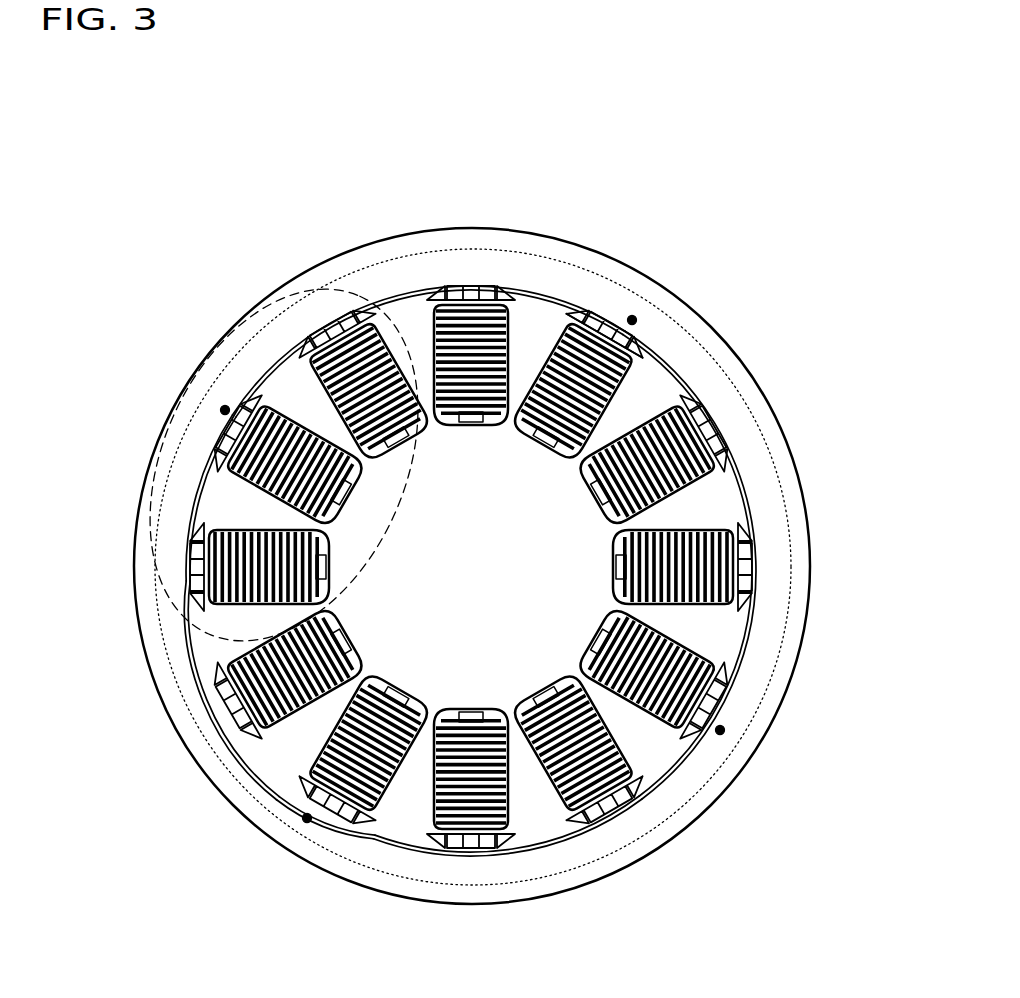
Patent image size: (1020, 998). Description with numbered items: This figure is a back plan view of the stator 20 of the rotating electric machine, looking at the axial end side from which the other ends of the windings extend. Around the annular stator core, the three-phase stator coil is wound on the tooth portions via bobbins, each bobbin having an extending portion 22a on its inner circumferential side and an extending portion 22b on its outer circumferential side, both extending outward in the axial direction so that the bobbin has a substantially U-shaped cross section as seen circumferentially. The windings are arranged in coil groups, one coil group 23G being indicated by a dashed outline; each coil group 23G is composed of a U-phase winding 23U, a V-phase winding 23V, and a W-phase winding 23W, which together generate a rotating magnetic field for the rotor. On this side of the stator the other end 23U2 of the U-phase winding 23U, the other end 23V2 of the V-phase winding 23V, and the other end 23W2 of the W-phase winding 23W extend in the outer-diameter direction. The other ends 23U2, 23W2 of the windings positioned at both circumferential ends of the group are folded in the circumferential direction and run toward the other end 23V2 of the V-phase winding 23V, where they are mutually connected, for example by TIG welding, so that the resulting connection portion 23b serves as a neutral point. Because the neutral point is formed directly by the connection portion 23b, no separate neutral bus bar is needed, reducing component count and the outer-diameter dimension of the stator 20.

The stator 20 is at (263, 285).
The extending portion 22a is at (528, 428).
The extending portion 22b is at (634, 320).
The coil group 23G is at (192, 426).
The U-phase winding 23U is at (322, 622).
The V-phase winding 23V is at (548, 437).
The W-phase winding 23W is at (470, 712).
The other end of the U-phase winding 23U2 is at (214, 733).
The other end of the V-phase winding 23V2 is at (308, 818).
The other end of the W-phase winding 23W2 is at (182, 503).
The connection portion 23b is at (304, 820).